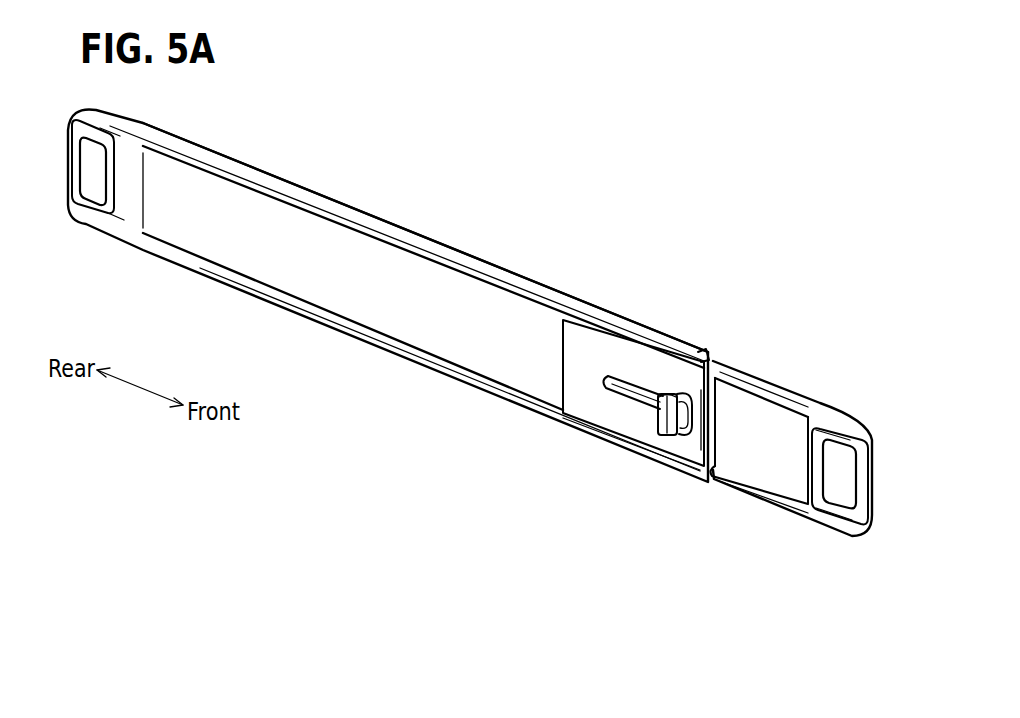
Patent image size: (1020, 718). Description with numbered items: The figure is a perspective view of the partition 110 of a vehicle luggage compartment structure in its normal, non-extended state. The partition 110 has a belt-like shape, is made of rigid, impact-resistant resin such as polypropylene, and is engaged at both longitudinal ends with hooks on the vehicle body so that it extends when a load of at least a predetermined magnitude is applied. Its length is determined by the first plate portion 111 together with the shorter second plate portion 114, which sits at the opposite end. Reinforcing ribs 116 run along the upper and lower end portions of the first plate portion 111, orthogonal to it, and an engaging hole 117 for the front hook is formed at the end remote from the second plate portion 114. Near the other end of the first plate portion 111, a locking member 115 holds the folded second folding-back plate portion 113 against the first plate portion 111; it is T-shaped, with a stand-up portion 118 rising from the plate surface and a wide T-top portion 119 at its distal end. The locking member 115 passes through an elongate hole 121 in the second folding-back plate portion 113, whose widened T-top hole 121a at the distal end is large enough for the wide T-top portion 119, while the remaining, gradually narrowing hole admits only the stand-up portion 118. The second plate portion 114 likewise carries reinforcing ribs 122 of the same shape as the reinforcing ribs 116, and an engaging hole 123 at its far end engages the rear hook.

The partition 110 is at (496, 219).
The first plate portion 111 is at (358, 258).
The second folding-back plate portion 113 is at (573, 368).
The second plate portion 114 is at (773, 437).
The locking member 115 is at (715, 533).
The reinforcing ribs 116 is at (232, 164).
The engaging hole 117 is at (88, 158).
The stand-up portion 118 is at (684, 427).
The wide T-top portion 119 is at (662, 420).
The elongate hole 121 is at (630, 386).
The widened T-top hole 121a is at (699, 378).
The reinforcing ribs 122 is at (763, 387).
The engaging hole 123 is at (846, 470).